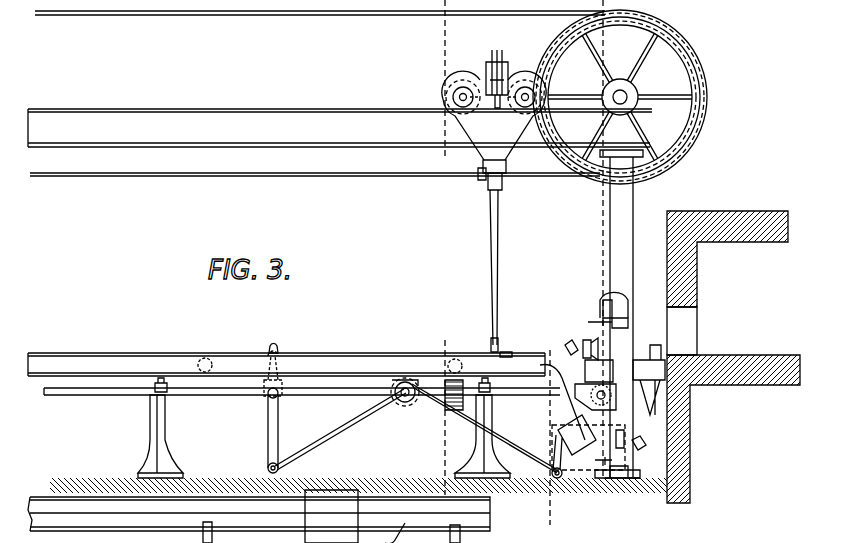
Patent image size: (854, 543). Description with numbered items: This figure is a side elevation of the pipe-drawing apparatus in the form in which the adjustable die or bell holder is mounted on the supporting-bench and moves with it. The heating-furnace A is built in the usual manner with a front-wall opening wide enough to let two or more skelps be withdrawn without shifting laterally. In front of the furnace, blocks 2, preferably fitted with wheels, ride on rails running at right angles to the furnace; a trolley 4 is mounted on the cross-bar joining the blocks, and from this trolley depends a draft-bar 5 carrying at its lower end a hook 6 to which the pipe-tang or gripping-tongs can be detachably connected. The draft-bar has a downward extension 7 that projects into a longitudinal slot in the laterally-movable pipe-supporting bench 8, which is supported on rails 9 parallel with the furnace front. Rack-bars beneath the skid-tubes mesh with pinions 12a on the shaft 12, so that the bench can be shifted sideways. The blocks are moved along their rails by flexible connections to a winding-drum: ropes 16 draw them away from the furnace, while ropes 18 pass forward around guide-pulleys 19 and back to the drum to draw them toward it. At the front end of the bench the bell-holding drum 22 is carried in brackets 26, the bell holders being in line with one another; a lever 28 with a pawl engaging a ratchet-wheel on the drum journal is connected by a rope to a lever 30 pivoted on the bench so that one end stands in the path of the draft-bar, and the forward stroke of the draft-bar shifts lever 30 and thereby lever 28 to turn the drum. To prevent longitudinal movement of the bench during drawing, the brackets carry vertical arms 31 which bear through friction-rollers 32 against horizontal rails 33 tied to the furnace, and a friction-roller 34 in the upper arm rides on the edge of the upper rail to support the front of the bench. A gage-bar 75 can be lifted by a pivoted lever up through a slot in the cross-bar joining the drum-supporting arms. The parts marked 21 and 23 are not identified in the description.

The blocks 2 is at (494, 130).
The trolley 4 is at (494, 62).
The draft-bar 5 is at (497, 253).
The hook 6 is at (491, 345).
The downward extension 7 is at (508, 356).
The pipe-supporting bench 8 is at (286, 370).
The rails 9 is at (155, 384).
The shaft 12 is at (238, 395).
The pinions 12a is at (446, 408).
The ropes 16 is at (358, 176).
The ropes 18 is at (384, 15).
The guide-pulleys 19 is at (700, 135).
The housing 21 is at (632, 412).
The bell-holding drum 22 is at (595, 385).
The stop 23 is at (583, 352).
The brackets 26 is at (562, 402).
The lever 28 is at (558, 448).
The lever 30 is at (280, 426).
The vertical arms 31 is at (625, 308).
The friction-rollers 32 is at (628, 323).
The horizontal rails 33 is at (597, 321).
The friction-roller 34 is at (603, 303).
The gage-bar 75 is at (661, 350).
The heating-furnace A is at (733, 357).